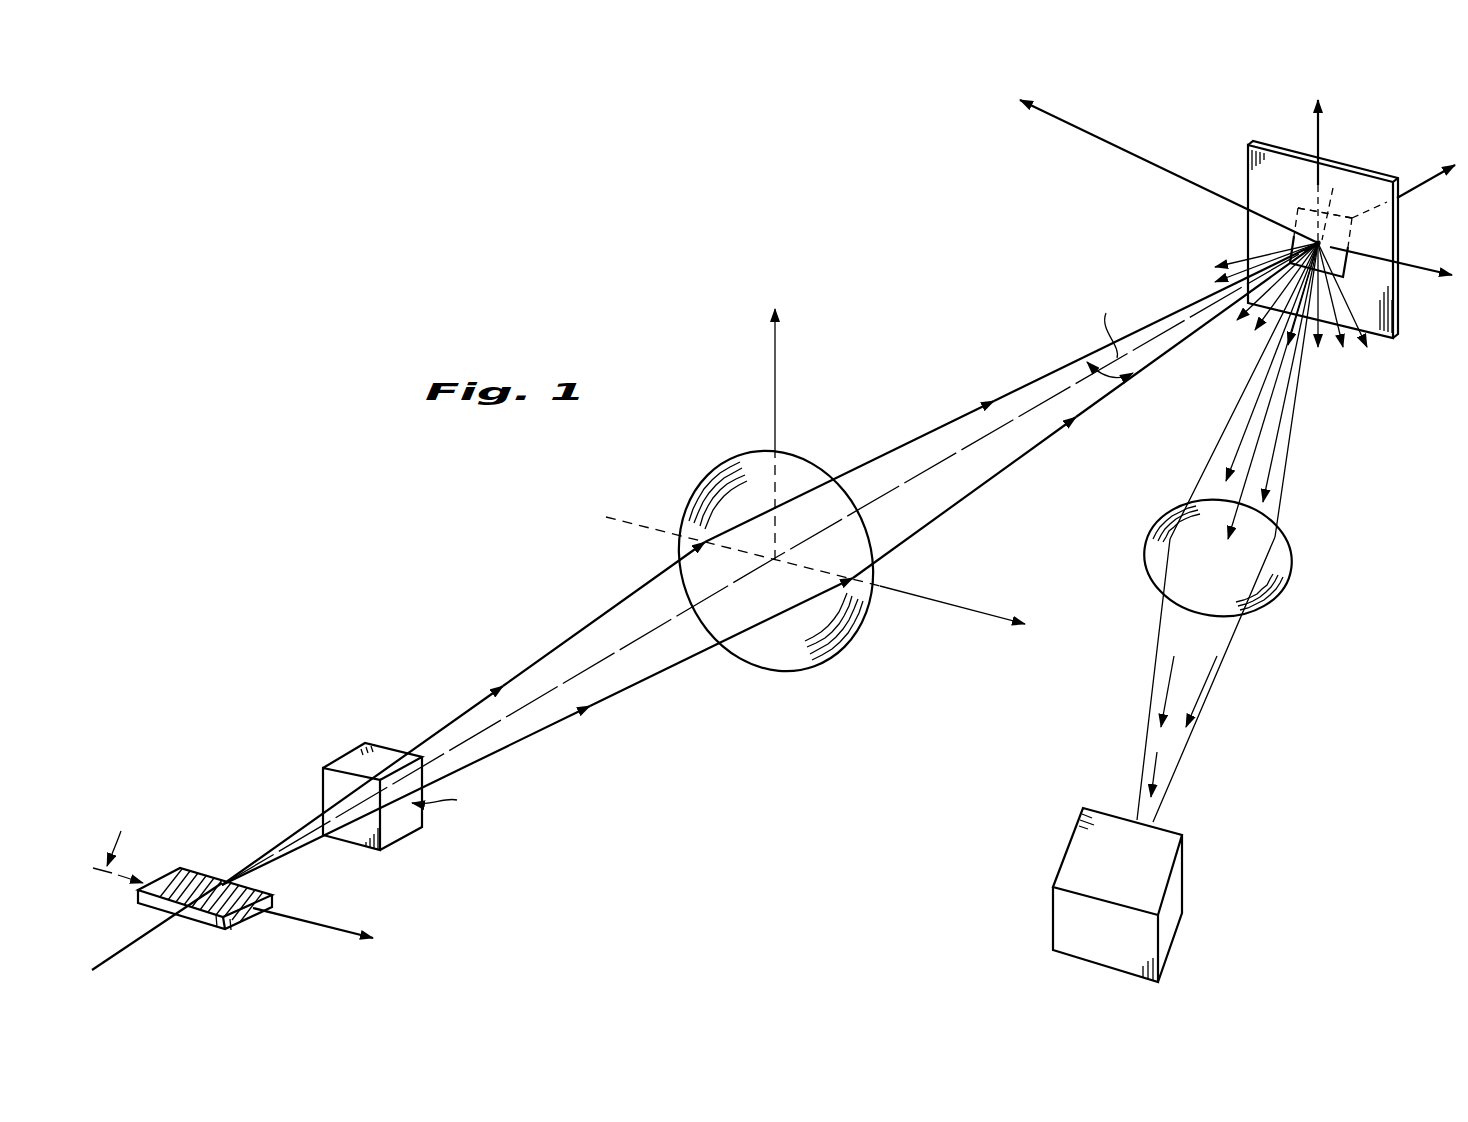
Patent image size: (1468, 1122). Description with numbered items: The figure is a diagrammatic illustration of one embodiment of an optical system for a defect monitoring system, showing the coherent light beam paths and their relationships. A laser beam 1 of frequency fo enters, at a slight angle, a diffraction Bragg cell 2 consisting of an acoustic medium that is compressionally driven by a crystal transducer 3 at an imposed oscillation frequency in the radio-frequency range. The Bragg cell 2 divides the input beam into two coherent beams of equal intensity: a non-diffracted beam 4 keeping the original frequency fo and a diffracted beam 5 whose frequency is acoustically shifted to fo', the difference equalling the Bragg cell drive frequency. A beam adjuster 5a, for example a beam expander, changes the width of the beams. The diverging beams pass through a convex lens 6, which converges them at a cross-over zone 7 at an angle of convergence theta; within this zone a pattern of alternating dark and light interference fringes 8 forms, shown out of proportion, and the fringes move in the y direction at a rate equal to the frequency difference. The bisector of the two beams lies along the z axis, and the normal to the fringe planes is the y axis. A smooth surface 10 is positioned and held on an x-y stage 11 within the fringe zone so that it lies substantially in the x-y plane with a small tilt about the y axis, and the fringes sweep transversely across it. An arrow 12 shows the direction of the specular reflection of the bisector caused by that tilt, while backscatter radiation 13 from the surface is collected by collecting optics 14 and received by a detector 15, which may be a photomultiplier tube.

The laser beam 1 is at (147, 940).
The diffraction Bragg cell 2 is at (187, 868).
The crystal transducer 3 is at (277, 896).
The non-diffracted beam 4 is at (458, 714).
The diffracted beam 5 is at (521, 737).
The beam adjuster 5a is at (451, 810).
The convex lens 6 is at (708, 476).
The cross-over zone 7 is at (1300, 240).
The interference fringes 8 is at (1327, 237).
The smooth surface 10 is at (1300, 208).
The x-y stage 11 is at (1247, 170).
The specular reflection arrow 12 is at (1142, 158).
The backscatter radiation 13 is at (1288, 532).
The collecting optics 14 is at (1281, 582).
The detector 15 is at (1182, 887).